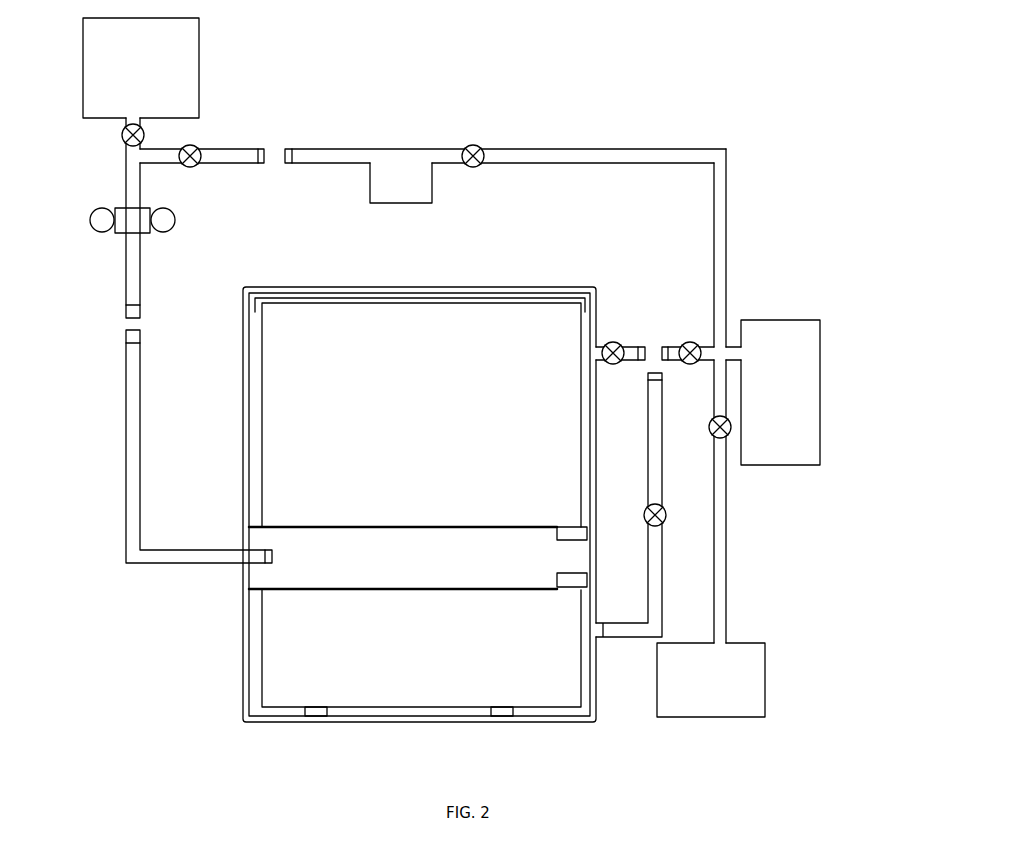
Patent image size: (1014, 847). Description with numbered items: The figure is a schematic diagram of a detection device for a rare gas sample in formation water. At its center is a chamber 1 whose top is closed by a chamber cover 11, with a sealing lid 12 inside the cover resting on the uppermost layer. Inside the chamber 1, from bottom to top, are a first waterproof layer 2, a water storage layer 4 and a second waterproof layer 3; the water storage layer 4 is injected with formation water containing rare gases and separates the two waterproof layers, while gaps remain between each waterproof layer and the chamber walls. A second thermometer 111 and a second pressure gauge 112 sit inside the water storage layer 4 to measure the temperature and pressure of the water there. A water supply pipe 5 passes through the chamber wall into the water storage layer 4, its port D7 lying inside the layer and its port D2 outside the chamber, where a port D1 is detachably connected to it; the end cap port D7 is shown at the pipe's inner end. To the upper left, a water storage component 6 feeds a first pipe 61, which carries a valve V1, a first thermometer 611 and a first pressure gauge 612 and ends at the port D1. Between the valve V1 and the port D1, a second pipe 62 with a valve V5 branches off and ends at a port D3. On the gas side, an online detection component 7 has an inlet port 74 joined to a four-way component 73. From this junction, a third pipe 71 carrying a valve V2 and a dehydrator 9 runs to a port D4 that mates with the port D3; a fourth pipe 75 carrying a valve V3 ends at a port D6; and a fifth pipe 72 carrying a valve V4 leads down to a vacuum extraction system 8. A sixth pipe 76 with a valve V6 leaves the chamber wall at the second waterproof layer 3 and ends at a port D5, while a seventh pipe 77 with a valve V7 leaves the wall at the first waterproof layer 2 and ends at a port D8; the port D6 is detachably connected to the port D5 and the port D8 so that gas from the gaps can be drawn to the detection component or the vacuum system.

The chamber 1 is at (247, 462).
The first waterproof layer 2 is at (285, 625).
The second waterproof layer 3 is at (274, 384).
The water storage layer 4 is at (260, 577).
The water supply pipe 5 is at (126, 462).
The water storage component 6 is at (200, 53).
The online detection component 7 is at (822, 408).
The vacuum extraction system 8 is at (743, 688).
The dehydrator 9 is at (370, 190).
The chamber cover 11 is at (245, 288).
The sealing lid 12 is at (245, 312).
The first pipe 61 is at (127, 172).
The second pipe 62 is at (232, 148).
The third pipe 71 is at (558, 146).
The fifth pipe 72 is at (727, 513).
The four-way component 73 is at (717, 350).
The inlet port 74 is at (729, 360).
The fourth pipe 75 is at (705, 343).
The sixth pipe 76 is at (643, 346).
The seventh pipe 77 is at (665, 563).
The second thermometer 111 is at (558, 541).
The second pressure gauge 112 is at (557, 579).
The first thermometer 611 is at (92, 223).
The first pressure gauge 612 is at (177, 228).
The valve V1 is at (123, 140).
The valve V2 is at (466, 146).
The valve V3 is at (683, 345).
The valve V4 is at (710, 438).
The valve V5 is at (193, 148).
The valve V6 is at (613, 343).
The valve V7 is at (645, 520).
The port D1 is at (125, 317).
The port D2 is at (127, 333).
The port D3 is at (262, 147).
The port D4 is at (290, 146).
The port D5 is at (643, 345).
The port D6 is at (663, 362).
The port D7 is at (260, 550).
The port D8 is at (650, 373).